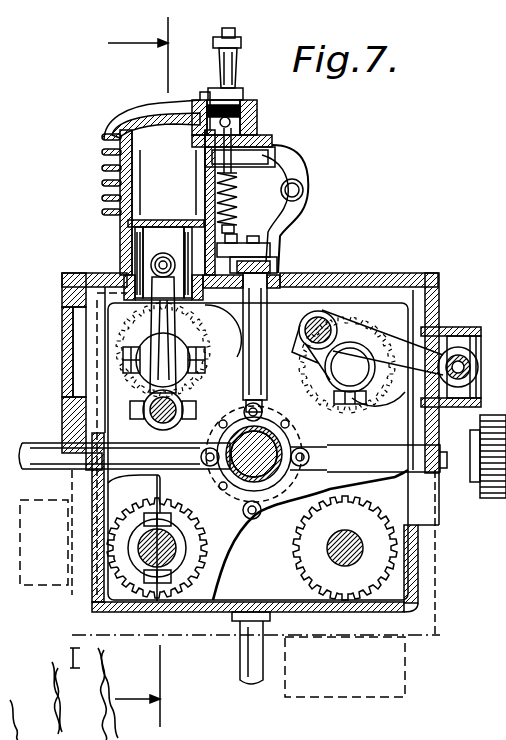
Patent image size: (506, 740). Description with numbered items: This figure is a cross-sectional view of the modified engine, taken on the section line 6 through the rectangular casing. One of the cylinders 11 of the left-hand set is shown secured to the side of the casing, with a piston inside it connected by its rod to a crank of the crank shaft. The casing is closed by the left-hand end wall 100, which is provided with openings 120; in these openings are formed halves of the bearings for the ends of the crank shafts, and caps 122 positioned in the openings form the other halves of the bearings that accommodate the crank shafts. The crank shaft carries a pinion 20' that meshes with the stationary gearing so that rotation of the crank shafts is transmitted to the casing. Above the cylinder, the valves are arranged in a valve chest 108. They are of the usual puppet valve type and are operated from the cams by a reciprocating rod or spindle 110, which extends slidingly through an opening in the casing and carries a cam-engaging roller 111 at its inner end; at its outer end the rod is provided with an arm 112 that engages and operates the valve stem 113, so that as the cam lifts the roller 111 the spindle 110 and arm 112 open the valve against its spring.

The section line 6 is at (146, 372).
The cylinders 11 is at (158, 196).
The valve chests 108 is at (248, 122).
The left-hand end wall 100 is at (278, 327).
The valve stems 113 is at (250, 180).
The arms 112 is at (268, 248).
The rods or spindles 110 is at (255, 353).
The cam-engaging rollers 111 is at (233, 462).
The openings 120 is at (392, 320).
The caps 122 is at (148, 543).
The gear 20' is at (325, 548).